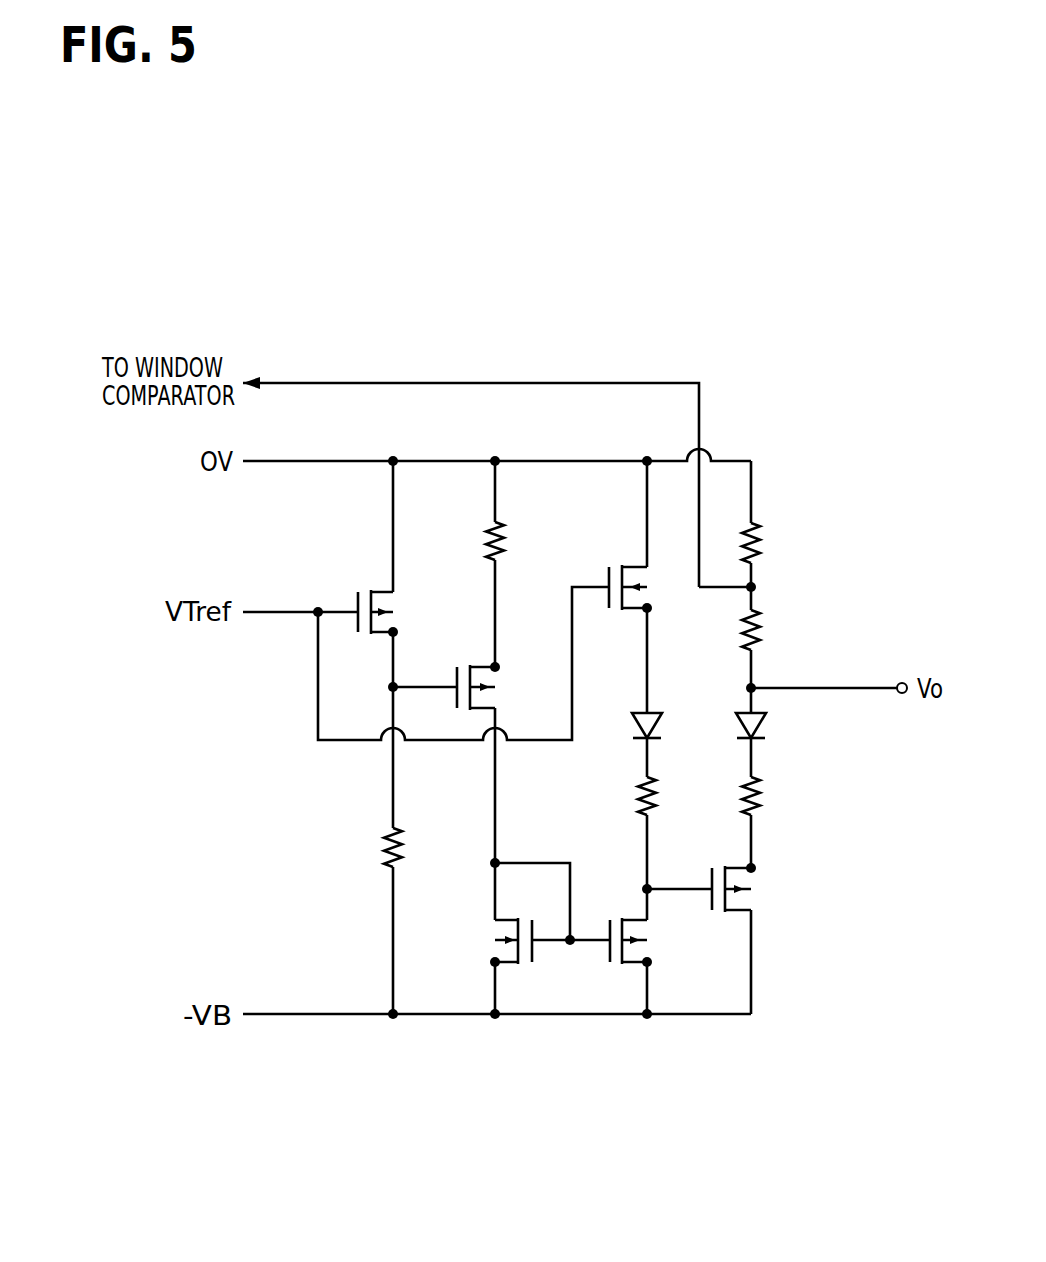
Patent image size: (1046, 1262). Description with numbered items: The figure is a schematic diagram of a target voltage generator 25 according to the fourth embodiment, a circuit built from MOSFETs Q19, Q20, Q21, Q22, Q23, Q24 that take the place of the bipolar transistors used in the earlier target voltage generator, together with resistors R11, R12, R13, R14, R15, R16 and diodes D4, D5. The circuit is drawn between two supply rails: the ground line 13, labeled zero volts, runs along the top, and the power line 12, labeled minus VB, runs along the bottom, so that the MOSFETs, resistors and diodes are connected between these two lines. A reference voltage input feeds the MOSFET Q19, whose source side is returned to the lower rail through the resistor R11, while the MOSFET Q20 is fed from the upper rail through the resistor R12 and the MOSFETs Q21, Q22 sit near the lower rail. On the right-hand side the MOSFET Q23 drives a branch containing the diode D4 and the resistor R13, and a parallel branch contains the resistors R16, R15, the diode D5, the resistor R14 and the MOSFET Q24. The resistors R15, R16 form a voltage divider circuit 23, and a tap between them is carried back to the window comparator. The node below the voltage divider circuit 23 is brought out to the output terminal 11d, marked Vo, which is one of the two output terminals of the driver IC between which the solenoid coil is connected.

The target voltage generator 25 is at (471, 354).
The ground line 13 is at (311, 461).
The power line 12 is at (316, 1016).
The voltage divider circuit 23 is at (809, 737).
The output terminal 11d is at (903, 682).
The MOSFET Q19 is at (378, 594).
The MOSFET Q20 is at (485, 707).
The MOSFET Q21 is at (510, 920).
The MOSFET Q22 is at (638, 922).
The MOSFET Q23 is at (632, 569).
The MOSFET Q24 is at (735, 910).
The resistor R11 is at (385, 840).
The resistor R12 is at (506, 541).
The resistor R13 is at (658, 793).
The resistor R14 is at (762, 793).
The resistor R15 is at (762, 633).
The resistor R16 is at (762, 540).
The diode D4 is at (660, 727).
The diode D5 is at (760, 727).